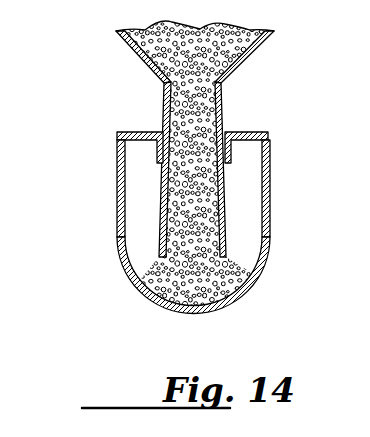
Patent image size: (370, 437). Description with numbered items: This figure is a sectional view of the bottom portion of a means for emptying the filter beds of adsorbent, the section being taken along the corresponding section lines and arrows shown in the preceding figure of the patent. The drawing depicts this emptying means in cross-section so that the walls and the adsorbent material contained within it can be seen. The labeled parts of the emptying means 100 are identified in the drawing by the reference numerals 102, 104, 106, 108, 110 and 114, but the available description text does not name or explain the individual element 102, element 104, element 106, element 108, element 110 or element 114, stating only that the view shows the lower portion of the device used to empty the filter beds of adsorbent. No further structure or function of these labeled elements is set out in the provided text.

The filling assembly 100 is at (247, 58).
The funnel 102 is at (138, 55).
The tubular neck 104 is at (226, 93).
The granular material 106 is at (224, 214).
The flange 108 is at (138, 133).
The container bottom 110 is at (255, 283).
The container side wall 114 is at (120, 178).